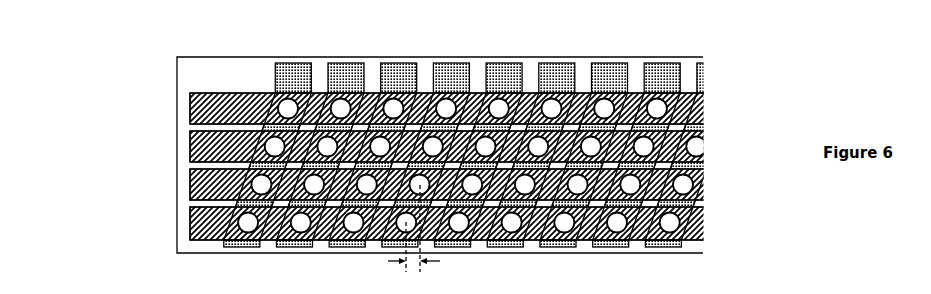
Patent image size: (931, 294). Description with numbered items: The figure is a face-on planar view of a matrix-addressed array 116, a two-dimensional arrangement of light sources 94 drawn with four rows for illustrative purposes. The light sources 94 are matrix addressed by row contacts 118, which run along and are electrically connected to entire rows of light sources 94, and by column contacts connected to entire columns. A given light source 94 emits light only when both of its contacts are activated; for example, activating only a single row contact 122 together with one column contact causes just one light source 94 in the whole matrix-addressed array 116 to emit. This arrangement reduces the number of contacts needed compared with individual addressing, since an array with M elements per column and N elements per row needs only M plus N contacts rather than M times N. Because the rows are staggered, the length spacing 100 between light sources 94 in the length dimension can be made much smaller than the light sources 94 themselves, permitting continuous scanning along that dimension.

The light source 94 is at (288, 247).
The length spacing 100 is at (425, 234).
The matrix-addressed array 116 is at (72, 142).
The row contact 118 is at (212, 115).
The row contact 122 is at (212, 183).